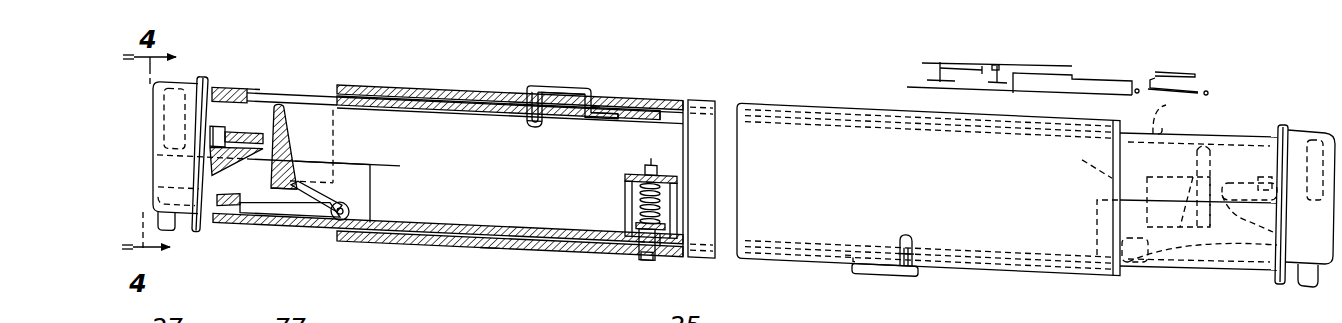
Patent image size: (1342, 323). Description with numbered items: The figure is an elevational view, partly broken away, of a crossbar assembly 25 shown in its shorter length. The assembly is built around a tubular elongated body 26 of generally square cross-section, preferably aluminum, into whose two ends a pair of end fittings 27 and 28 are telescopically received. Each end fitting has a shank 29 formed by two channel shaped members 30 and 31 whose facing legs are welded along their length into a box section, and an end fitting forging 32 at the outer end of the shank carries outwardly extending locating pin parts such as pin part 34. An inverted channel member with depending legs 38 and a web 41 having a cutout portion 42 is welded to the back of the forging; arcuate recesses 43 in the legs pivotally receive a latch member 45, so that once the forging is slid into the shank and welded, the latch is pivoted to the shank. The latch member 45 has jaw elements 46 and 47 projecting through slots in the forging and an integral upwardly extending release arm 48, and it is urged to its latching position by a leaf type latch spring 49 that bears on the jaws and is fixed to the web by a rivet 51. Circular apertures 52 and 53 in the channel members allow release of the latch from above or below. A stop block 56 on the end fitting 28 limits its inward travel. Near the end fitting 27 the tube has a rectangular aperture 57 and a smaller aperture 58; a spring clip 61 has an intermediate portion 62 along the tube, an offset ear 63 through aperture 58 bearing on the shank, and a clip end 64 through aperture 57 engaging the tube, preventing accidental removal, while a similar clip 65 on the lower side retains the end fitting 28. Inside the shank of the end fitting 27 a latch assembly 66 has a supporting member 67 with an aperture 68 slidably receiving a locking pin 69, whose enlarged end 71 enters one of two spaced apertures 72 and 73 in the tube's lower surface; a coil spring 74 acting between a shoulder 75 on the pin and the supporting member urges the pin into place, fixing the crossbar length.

The crossbar assembly 25 is at (701, 96).
The tubular elongated body 26 is at (640, 92).
The end fitting 27 is at (236, 90).
The end fitting 28 is at (1244, 133).
The shank 29 is at (409, 96).
The channel shaped member 30 is at (351, 87).
The channel shaped member 31 is at (412, 233).
The end fitting forging 32 is at (187, 76).
The locating pin part 34 is at (162, 171).
The depending leg 38 is at (366, 211).
The web 41 is at (240, 133).
The cutout portion 42 is at (358, 163).
The arcuate recess 43 is at (378, 184).
The latch member 45 is at (294, 124).
The jaw element 46 is at (1319, 285).
The jaw element 47 is at (160, 215).
The release arm 48 is at (291, 106).
The latch spring 49 is at (212, 158).
The rivet 51 is at (222, 126).
The circular aperture 52 is at (258, 94).
The circular aperture 53 is at (246, 222).
The stop block 56 is at (1092, 168).
The rectangular aperture 57 is at (511, 96).
The rectangular aperture 58 is at (600, 96).
The spring clip 61 is at (565, 84).
The intermediate portion 62 is at (586, 98).
The offset ear 63 is at (616, 122).
The clip end 64 is at (532, 121).
The clip 65 is at (900, 279).
The latch assembly 66 is at (621, 199).
The supporting member 67 is at (632, 170).
The aperture 68 is at (659, 168).
The locking pin 69 is at (652, 158).
The enlarged end 71 is at (651, 262).
The aperture 72 is at (640, 259).
The aperture 73 is at (492, 251).
The coil spring 74 is at (680, 201).
The shoulder 75 is at (629, 227).